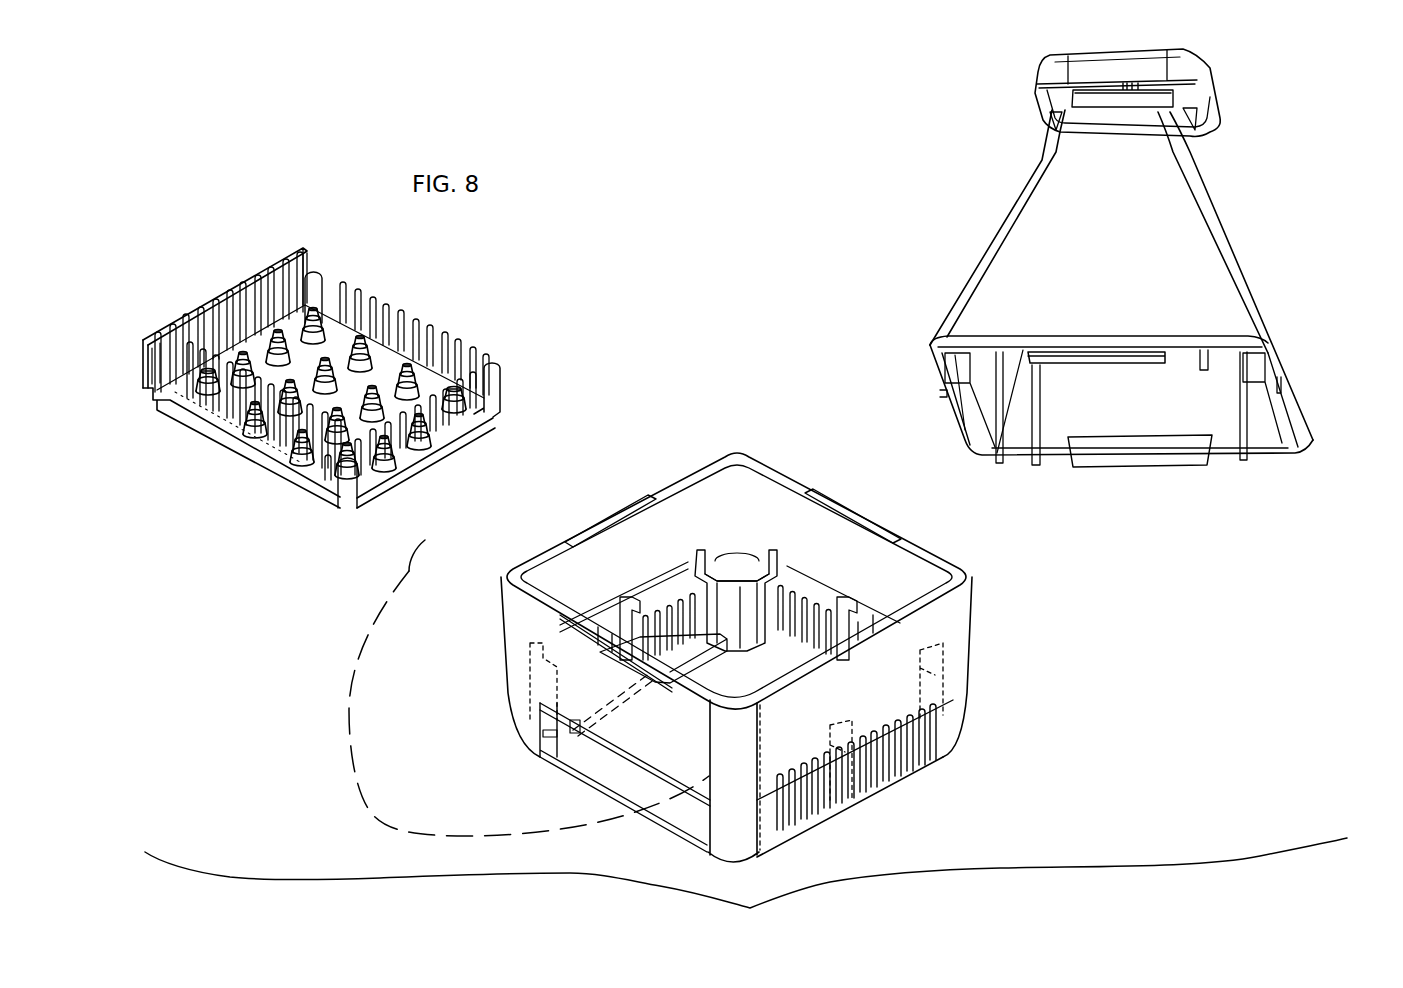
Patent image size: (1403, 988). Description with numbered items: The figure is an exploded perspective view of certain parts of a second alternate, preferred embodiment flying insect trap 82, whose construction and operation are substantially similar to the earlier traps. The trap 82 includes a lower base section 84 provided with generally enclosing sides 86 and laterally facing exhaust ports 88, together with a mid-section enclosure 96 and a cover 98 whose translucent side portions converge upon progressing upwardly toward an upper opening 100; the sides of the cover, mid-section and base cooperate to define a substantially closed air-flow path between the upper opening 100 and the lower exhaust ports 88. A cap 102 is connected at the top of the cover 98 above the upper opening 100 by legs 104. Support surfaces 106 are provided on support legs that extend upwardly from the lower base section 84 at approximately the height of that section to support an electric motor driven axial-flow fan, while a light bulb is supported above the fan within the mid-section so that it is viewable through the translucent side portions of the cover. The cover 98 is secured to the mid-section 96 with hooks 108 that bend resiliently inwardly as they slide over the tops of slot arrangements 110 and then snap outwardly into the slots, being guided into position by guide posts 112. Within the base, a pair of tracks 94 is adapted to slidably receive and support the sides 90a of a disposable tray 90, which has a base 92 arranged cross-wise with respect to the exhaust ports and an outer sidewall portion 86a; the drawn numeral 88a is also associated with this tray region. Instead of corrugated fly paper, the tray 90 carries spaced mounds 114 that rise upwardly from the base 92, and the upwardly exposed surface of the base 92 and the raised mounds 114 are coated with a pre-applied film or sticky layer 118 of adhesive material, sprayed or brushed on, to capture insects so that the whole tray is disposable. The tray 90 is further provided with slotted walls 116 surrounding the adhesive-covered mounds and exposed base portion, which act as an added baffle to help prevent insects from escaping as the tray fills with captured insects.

The flying insect trap 82 is at (746, 888).
The lower base section 84 is at (728, 630).
The sides 86 is at (560, 624).
The outer sidewall portion 86a is at (284, 246).
The exhaust ports 88 is at (783, 601).
The tray wall slot 88a is at (230, 280).
The disposable tray 90 is at (420, 268).
The sides of the tray 90a is at (250, 433).
The base 92 is at (345, 508).
The tracks 94 is at (690, 584).
The mid-section enclosure 96 is at (963, 611).
The cover 98 is at (987, 257).
The upper opening 100 is at (1213, 102).
The cap 102 is at (1208, 73).
The legs 104 is at (1113, 107).
The support surfaces 106 is at (736, 551).
The hooks 108 is at (1147, 352).
The slot arrangements 110 is at (635, 503).
The guide posts 112 is at (1213, 357).
The mounds 114 is at (433, 350).
The slotted walls 116 is at (497, 359).
The sticky layer 118 is at (342, 284).